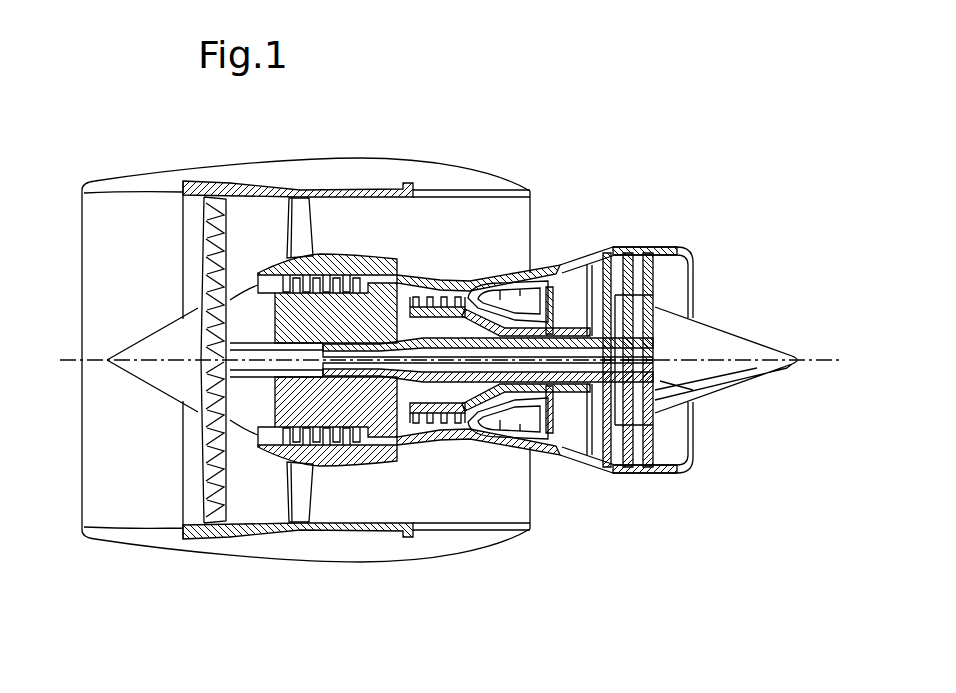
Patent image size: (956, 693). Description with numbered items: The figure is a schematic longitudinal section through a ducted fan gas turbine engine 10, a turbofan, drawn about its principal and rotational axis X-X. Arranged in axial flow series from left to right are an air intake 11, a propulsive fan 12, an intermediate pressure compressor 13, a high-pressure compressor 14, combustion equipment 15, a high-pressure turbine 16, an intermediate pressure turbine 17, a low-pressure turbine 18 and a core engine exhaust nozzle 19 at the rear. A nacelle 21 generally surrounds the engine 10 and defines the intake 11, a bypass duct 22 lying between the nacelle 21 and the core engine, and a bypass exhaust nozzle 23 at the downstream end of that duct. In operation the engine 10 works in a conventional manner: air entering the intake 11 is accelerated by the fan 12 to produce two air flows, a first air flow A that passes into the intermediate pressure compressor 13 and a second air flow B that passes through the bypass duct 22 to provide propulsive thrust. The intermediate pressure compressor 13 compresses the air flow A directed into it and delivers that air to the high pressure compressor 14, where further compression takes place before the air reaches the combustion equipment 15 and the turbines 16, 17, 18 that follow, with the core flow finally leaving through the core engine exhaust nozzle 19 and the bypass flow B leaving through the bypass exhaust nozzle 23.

The ducted fan gas turbine engine 10 is at (150, 136).
The air intake 11 is at (132, 198).
The propulsive fan 12 is at (207, 478).
The intermediate pressure compressor 13 is at (337, 452).
The high-pressure compressor 14 is at (443, 293).
The combustion equipment 15 is at (472, 443).
The high-pressure turbine 16 is at (532, 442).
The intermediate pressure turbine 17 is at (580, 276).
The low-pressure turbine 18 is at (598, 468).
The core engine exhaust nozzle 19 is at (690, 249).
The nacelle 21 is at (307, 158).
The bypass duct 22 is at (504, 232).
The bypass exhaust nozzle 23 is at (523, 190).
The first air flow A is at (245, 280).
The second air flow B is at (252, 227).